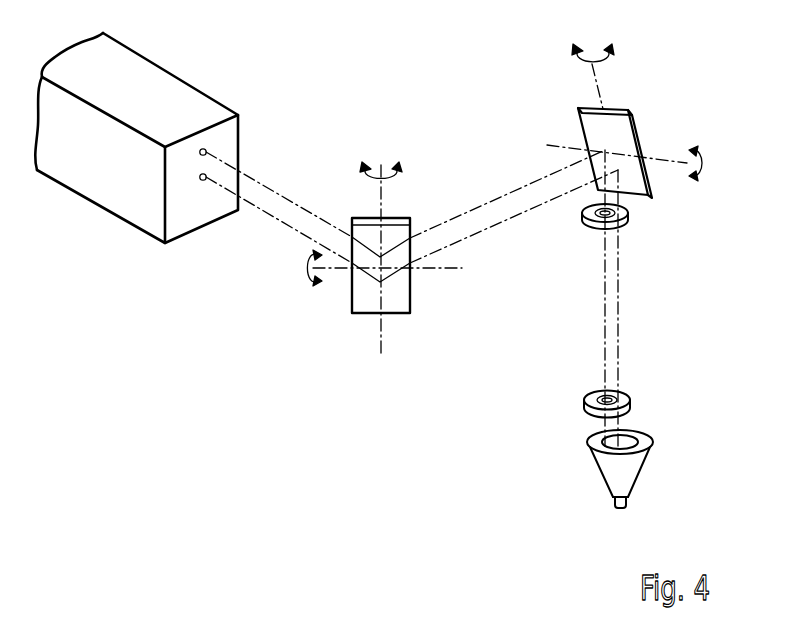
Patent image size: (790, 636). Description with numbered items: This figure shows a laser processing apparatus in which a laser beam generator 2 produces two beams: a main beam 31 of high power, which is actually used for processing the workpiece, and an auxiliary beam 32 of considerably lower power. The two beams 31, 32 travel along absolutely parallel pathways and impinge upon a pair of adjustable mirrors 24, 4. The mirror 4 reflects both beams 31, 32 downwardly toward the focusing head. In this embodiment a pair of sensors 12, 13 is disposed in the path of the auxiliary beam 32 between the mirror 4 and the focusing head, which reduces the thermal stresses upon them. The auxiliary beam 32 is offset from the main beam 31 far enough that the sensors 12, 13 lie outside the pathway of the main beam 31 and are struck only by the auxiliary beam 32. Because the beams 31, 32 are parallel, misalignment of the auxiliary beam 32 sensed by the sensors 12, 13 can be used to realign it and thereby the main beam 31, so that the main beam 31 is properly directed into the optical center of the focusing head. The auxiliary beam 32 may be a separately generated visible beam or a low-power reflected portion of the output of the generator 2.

The laser beam generator 2 is at (168, 95).
The auxiliary beam 32 is at (288, 198).
The main beam 31 is at (287, 226).
The adjustable mirror 24 is at (398, 240).
The adjustable mirror 4 is at (622, 145).
The sensor 13 is at (582, 223).
The sensor 12 is at (592, 398).